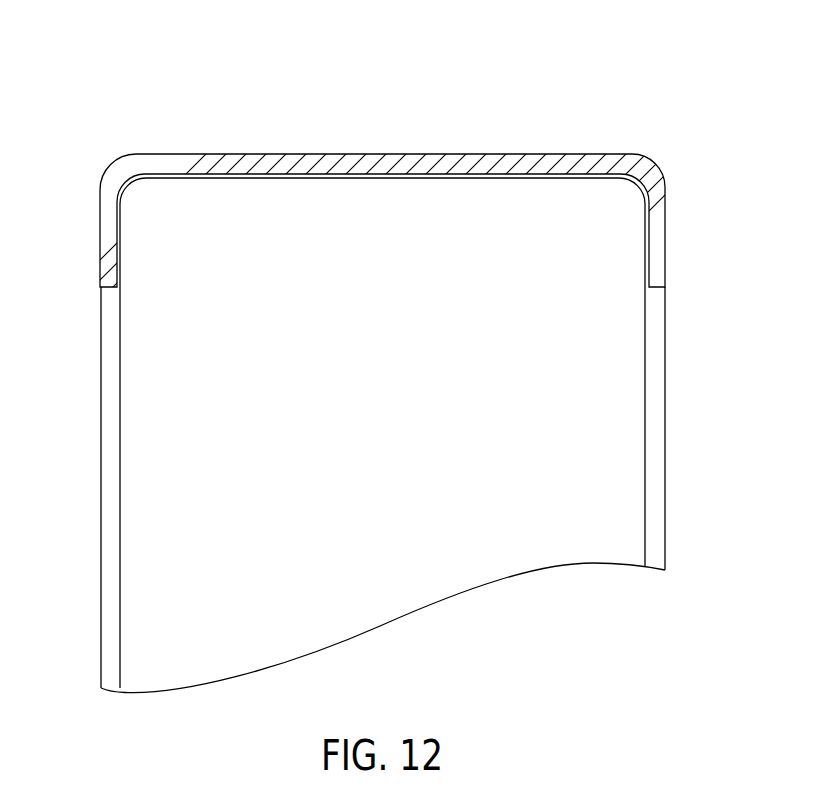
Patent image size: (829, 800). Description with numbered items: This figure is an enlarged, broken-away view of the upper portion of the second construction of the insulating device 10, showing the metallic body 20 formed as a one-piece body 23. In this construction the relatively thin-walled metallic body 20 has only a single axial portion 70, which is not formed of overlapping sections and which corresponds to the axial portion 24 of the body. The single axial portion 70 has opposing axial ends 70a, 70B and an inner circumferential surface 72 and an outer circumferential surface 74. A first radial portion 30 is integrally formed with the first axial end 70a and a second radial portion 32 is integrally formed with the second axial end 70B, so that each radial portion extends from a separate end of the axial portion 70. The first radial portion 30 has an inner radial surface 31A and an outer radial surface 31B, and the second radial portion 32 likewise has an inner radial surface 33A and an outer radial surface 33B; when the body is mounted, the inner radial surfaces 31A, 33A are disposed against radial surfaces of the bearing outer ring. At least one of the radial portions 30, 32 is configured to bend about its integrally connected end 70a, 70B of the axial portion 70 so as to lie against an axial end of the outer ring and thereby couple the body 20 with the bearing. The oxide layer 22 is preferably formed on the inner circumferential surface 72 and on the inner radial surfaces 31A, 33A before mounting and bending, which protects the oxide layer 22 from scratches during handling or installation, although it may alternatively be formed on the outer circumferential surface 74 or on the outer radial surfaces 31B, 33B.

The electronic device 10 is at (160, 82).
The metallic body 20 is at (303, 108).
The oxide layer 22 is at (358, 180).
The one-piece body 23 is at (357, 133).
The axial portion 24 is at (432, 152).
The first radial portion 30 is at (672, 225).
The inner radial surface 31A is at (648, 253).
The outer radial surface 31B is at (665, 272).
The second radial portion 32 is at (97, 230).
The inner radial surface 33A is at (103, 270).
The outer radial surface 33B is at (100, 262).
The single axial portion 70 is at (525, 165).
The first axial end of axial portion 70a is at (630, 165).
The second axial end of axial portion 70B is at (132, 160).
The inner circumferential surface 72 is at (262, 180).
The outer circumferential surface 74 is at (222, 153).